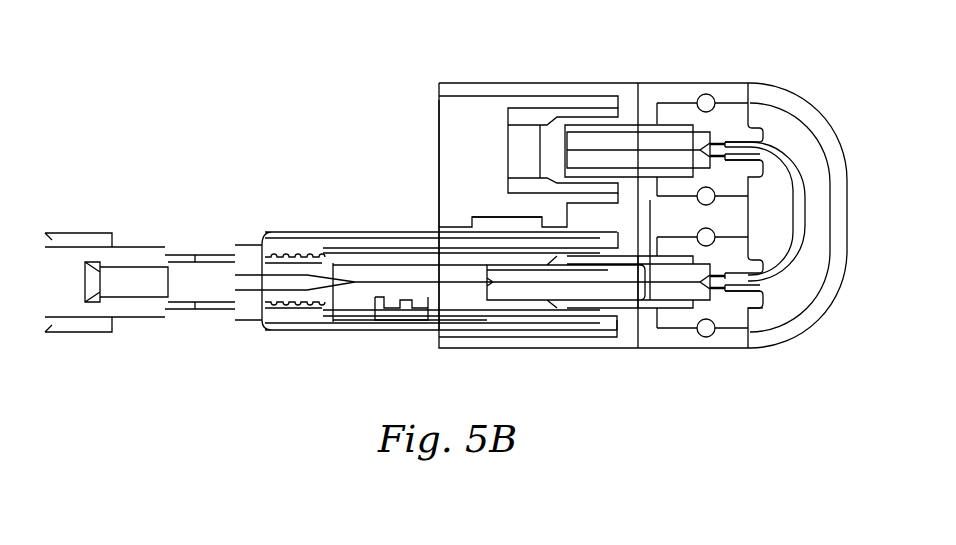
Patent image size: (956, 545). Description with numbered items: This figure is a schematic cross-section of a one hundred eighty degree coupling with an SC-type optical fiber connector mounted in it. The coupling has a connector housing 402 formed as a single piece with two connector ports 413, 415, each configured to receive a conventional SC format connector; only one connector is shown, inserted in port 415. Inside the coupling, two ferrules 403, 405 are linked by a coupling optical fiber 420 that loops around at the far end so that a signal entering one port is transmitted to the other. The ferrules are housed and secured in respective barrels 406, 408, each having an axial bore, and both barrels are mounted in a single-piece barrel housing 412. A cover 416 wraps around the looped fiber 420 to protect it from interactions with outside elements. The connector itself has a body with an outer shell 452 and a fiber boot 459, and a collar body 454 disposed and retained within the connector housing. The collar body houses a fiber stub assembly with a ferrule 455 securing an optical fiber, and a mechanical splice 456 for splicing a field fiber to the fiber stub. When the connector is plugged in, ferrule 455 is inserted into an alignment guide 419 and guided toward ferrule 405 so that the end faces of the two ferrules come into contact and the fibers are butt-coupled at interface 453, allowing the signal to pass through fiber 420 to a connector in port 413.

The connector housing 402 is at (506, 88).
The ferrule 403 is at (650, 140).
The ferrule 405 is at (672, 292).
The barrel 406 is at (677, 108).
The barrel 408 is at (733, 316).
The barrel housing 412 is at (725, 92).
The connector port 413 is at (447, 152).
The connector port 415 is at (448, 224).
The cover 416 is at (787, 97).
The alignment guide 419 is at (627, 300).
The optical fiber 420 is at (790, 265).
The outer shell 452 is at (300, 234).
The interface 453 is at (652, 292).
The collar body 454 is at (382, 318).
The ferrule 455 is at (536, 292).
The mechanical splice 456 is at (452, 302).
The fiber boot 459 is at (66, 242).